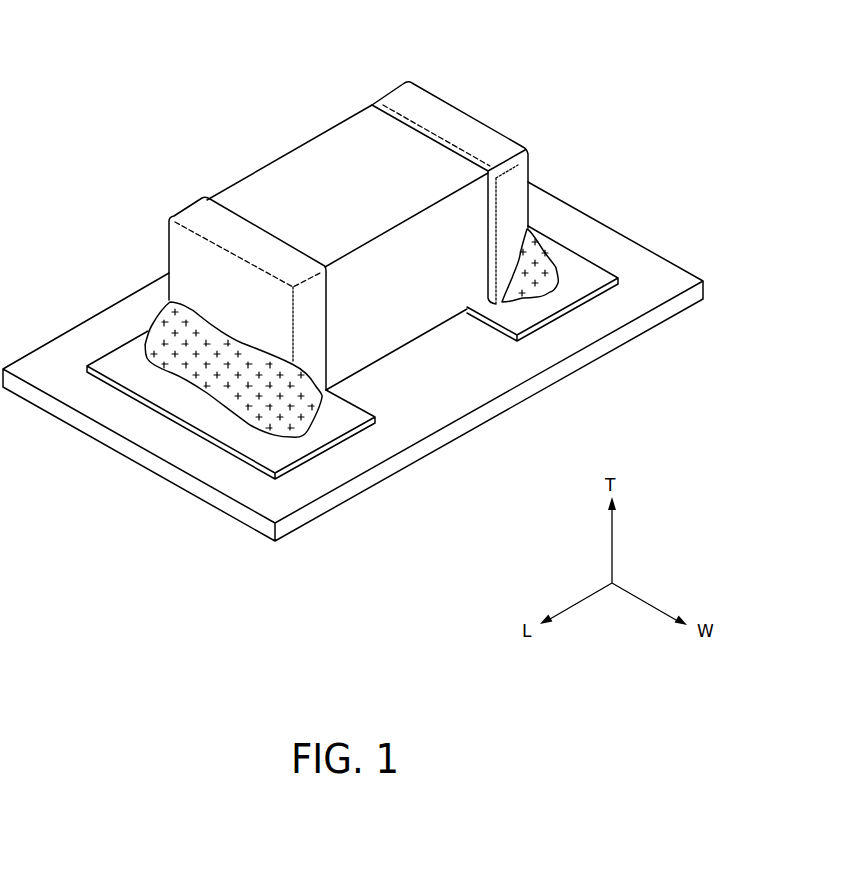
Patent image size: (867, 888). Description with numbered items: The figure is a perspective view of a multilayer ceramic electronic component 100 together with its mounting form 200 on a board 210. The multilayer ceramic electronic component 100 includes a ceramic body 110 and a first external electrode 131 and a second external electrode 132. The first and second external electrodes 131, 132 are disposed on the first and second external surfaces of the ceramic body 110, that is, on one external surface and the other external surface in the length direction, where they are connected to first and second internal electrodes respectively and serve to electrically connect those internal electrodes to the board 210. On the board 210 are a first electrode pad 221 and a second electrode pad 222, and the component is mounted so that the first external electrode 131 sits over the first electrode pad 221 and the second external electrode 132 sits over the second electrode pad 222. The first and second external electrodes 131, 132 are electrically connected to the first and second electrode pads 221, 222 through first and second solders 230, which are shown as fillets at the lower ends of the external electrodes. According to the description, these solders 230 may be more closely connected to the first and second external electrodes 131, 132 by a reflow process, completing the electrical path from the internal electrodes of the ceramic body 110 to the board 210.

The multilayer ceramic electronic component 100 is at (334, 209).
The ceramic body 110 is at (303, 173).
The first external electrode 131 is at (197, 217).
The second external electrode 132 is at (398, 105).
The mounting form 200 is at (125, 52).
The board 210 is at (462, 378).
The first electrode pad 221 is at (325, 427).
The second electrode pad 222 is at (563, 290).
The solder 230 is at (210, 367).